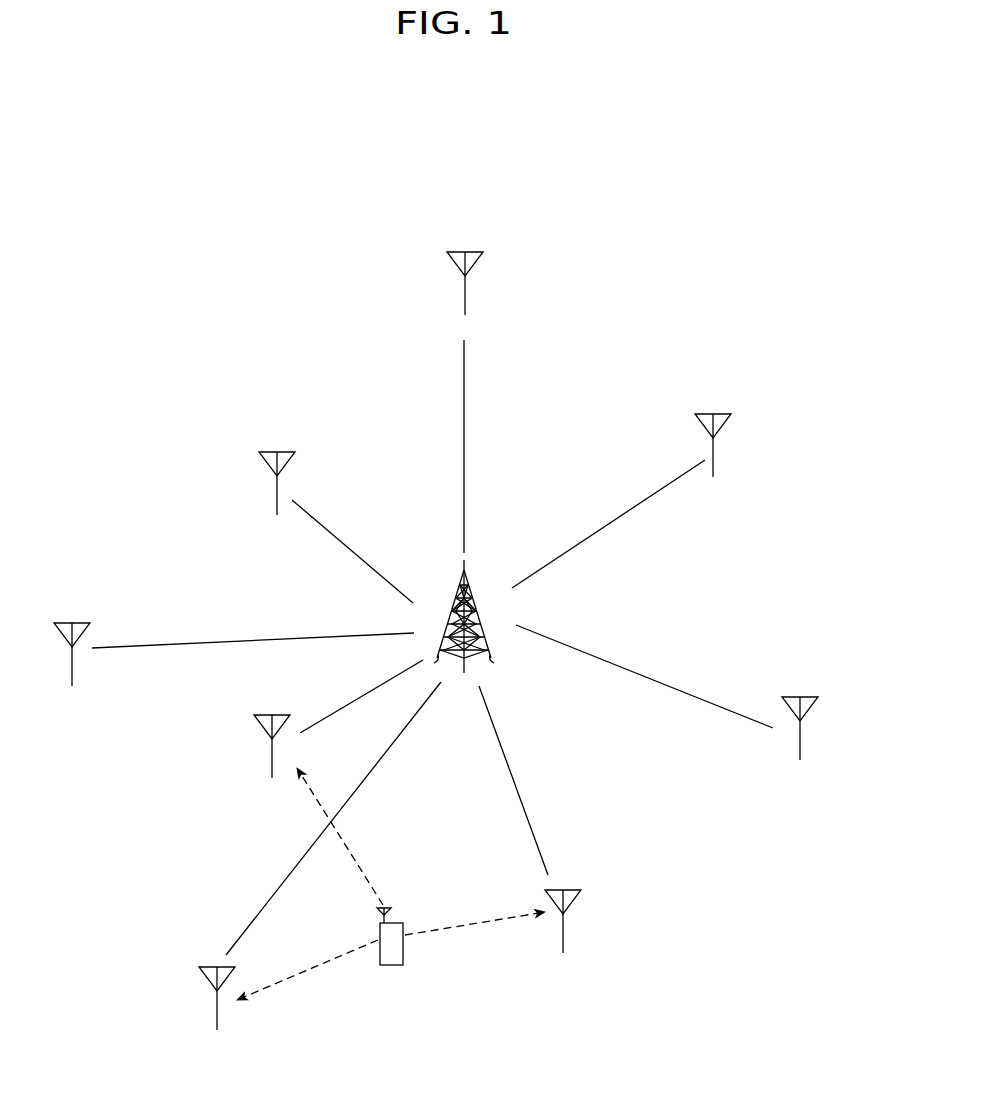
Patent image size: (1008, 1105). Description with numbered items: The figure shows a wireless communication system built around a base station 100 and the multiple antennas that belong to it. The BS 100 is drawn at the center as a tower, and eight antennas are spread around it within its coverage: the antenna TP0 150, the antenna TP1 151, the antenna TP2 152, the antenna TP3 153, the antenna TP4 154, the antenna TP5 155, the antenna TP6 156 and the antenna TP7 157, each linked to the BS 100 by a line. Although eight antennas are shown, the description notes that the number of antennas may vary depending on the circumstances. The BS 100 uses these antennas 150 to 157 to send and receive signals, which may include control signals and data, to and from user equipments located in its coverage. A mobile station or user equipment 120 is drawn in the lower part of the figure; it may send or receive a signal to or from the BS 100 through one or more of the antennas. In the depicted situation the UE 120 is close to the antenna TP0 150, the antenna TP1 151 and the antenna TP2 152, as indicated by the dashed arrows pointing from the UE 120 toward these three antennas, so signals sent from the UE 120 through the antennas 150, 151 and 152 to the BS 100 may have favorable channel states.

The base station 100 is at (485, 545).
The user equipment 120 is at (393, 918).
The antenna TP0 150 is at (585, 978).
The antenna TP1 151 is at (273, 711).
The antenna TP2 152 is at (247, 1051).
The antenna TP3 153 is at (97, 706).
The antenna TP4 154 is at (295, 479).
The antenna TP5 155 is at (497, 310).
The antenna TP6 156 is at (736, 496).
The antenna TP7 157 is at (814, 761).